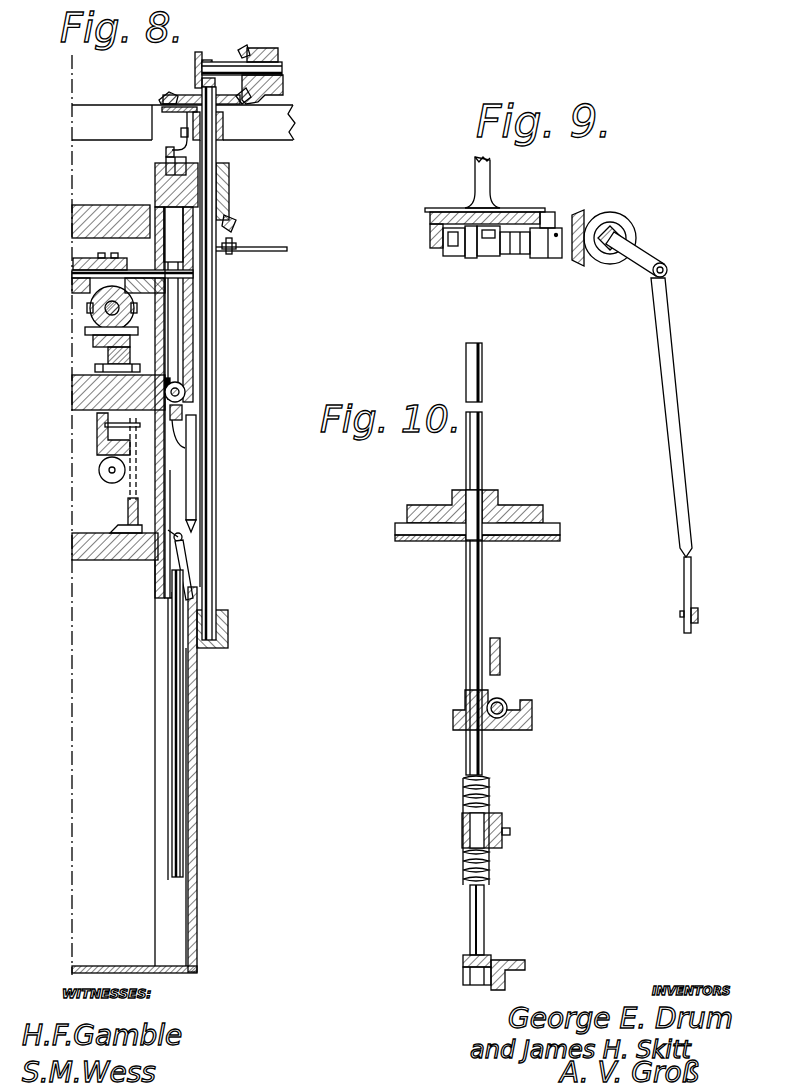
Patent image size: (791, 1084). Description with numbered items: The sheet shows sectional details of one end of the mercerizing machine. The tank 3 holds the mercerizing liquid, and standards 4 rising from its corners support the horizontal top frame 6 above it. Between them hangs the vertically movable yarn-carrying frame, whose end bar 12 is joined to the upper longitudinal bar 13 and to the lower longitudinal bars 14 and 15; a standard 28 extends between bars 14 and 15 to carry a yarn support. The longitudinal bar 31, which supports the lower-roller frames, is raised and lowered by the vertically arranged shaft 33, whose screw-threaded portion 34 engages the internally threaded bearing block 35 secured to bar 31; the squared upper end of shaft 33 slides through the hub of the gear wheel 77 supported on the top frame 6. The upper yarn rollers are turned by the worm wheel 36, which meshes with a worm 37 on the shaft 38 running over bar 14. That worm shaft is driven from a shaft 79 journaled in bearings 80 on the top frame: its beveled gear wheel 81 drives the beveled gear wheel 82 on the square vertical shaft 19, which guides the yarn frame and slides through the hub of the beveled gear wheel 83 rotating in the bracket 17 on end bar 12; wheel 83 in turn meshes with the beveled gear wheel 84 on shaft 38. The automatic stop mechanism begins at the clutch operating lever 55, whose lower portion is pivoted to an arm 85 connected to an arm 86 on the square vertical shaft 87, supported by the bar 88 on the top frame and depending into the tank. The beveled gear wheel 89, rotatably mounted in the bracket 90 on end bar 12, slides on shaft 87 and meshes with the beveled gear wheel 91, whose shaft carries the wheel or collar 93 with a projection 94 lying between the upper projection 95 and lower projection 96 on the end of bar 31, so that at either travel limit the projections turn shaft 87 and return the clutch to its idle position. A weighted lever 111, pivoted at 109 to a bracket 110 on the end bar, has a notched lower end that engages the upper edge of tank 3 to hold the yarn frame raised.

In FIG. 8, the tank 3 is at (198, 798).
In FIG. 8, the standards 4 is at (190, 338).
In FIG. 8, the horizontal frame 6 is at (283, 133).
In FIG. 8, the end bar 12 is at (156, 176).
In FIG. 9, the end bar 12 is at (432, 232).
In FIG. 8, the upper longitudinal bar 13 is at (82, 215).
In FIG. 10, the upper longitudinal bar 13 is at (501, 652).
In FIG. 8, the longitudinal bar 14 is at (75, 290).
In FIG. 10, the longitudinal bar 14 is at (533, 722).
In FIG. 8, the longitudinal bar 15 is at (102, 562).
In FIG. 10, the longitudinal bar 15 is at (515, 966).
In FIG. 8, the bracket 17 is at (229, 187).
In FIG. 8, the shaft 19 is at (217, 482).
In FIG. 8, the standard 28 is at (128, 520).
In FIG. 8, the bar 31 is at (82, 400).
In FIG. 9, the bar 31 is at (491, 164).
In FIG. 10, the bar 31 is at (511, 832).
In FIG. 10, the vertically arranged shaft 33 is at (484, 600).
In FIG. 10, the screw-threaded portion 34 is at (466, 858).
In FIG. 10, the bearing block 35 is at (483, 830).
In FIG. 8, the worm wheel 36 is at (90, 320).
In FIG. 8, the worm 37 is at (94, 262).
In FIG. 10, the worm 37 is at (512, 710).
In FIG. 8, the shaft 38 is at (72, 274).
In FIG. 10, the shaft 38 is at (500, 700).
In FIG. 9, the operating lever 55 is at (699, 621).
In FIG. 10, the gear wheel 77 is at (508, 518).
In FIG. 8, the shaft 79 is at (275, 72).
In FIG. 8, the bearing 80 is at (196, 74).
In FIG. 8, the beveled gear wheel 81 is at (255, 52).
In FIG. 8, the beveled gear wheel 82 is at (166, 97).
In FIG. 8, the beveled gear wheel 83 is at (236, 222).
In FIG. 8, the beveled gear wheel 84 is at (193, 293).
In FIG. 8, the arm 85 is at (270, 253).
In FIG. 9, the arm 85 is at (670, 405).
In FIG. 8, the arm 86 is at (230, 246).
In FIG. 9, the arm 86 is at (640, 256).
In FIG. 8, the shaft 87 is at (176, 733).
In FIG. 9, the shaft 87 is at (607, 252).
In FIG. 8, the bar 88 is at (166, 153).
In FIG. 9, the beveled gear wheel 89 is at (630, 228).
In FIG. 9, the bracket 90 is at (548, 226).
In FIG. 9, the beveled gear wheel 91 is at (582, 222).
In FIG. 8, the wheel or collar 93 is at (184, 388).
In FIG. 9, the wheel or collar 93 is at (456, 256).
In FIG. 8, the projection 94 is at (183, 410).
In FIG. 9, the projection 94 is at (488, 256).
In FIG. 8, the upper projection 95 is at (176, 372).
In FIG. 9, the upper projection 95 is at (471, 258).
In FIG. 8, the lower projection 96 is at (185, 448).
In FIG. 8, the pivot 109 is at (197, 530).
In FIG. 8, the bracket 110 is at (195, 566).
In FIG. 8, the lever 111 is at (190, 552).